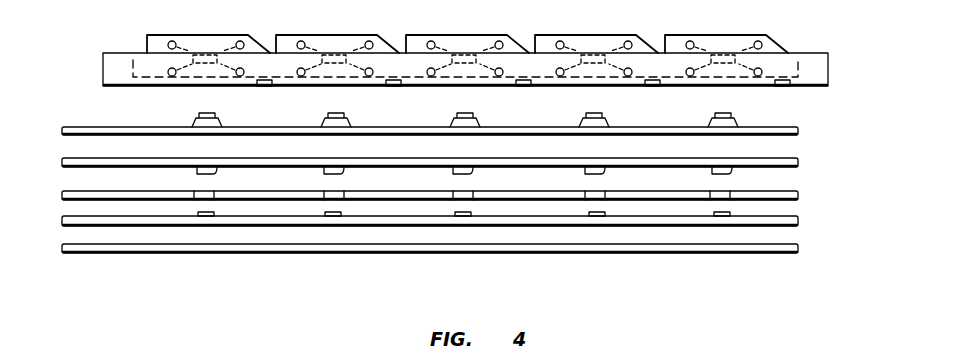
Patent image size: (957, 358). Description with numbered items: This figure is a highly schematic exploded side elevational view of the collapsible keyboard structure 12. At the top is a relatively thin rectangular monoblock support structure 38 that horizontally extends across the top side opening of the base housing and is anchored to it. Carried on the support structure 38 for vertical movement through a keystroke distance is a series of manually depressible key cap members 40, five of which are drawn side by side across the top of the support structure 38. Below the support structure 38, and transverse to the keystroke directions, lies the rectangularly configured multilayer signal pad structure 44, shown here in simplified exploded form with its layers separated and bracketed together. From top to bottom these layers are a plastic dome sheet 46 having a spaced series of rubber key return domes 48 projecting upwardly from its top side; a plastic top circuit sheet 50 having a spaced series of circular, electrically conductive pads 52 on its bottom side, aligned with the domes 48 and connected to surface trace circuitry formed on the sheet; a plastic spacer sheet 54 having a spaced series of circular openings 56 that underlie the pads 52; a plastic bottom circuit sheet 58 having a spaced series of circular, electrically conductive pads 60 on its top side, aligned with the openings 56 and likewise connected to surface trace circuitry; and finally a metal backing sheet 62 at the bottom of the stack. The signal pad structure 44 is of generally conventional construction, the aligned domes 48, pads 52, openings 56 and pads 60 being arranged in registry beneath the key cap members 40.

The collapsible keyboard structure 12 is at (86, 86).
The monoblock support structure 38 is at (829, 58).
The key cap members 40 is at (208, 35).
The signal pad structure 44 is at (812, 122).
The dome sheet 46 is at (110, 127).
The key return domes 48 is at (220, 118).
The top circuit sheet 50 is at (162, 168).
The electrically conductive pads 52 is at (217, 173).
The spacer sheet 54 is at (128, 200).
The circular openings 56 is at (215, 198).
The bottom circuit sheet 58 is at (118, 227).
The electrically conductive pads 60 is at (214, 213).
The metal backing sheet 62 is at (104, 254).